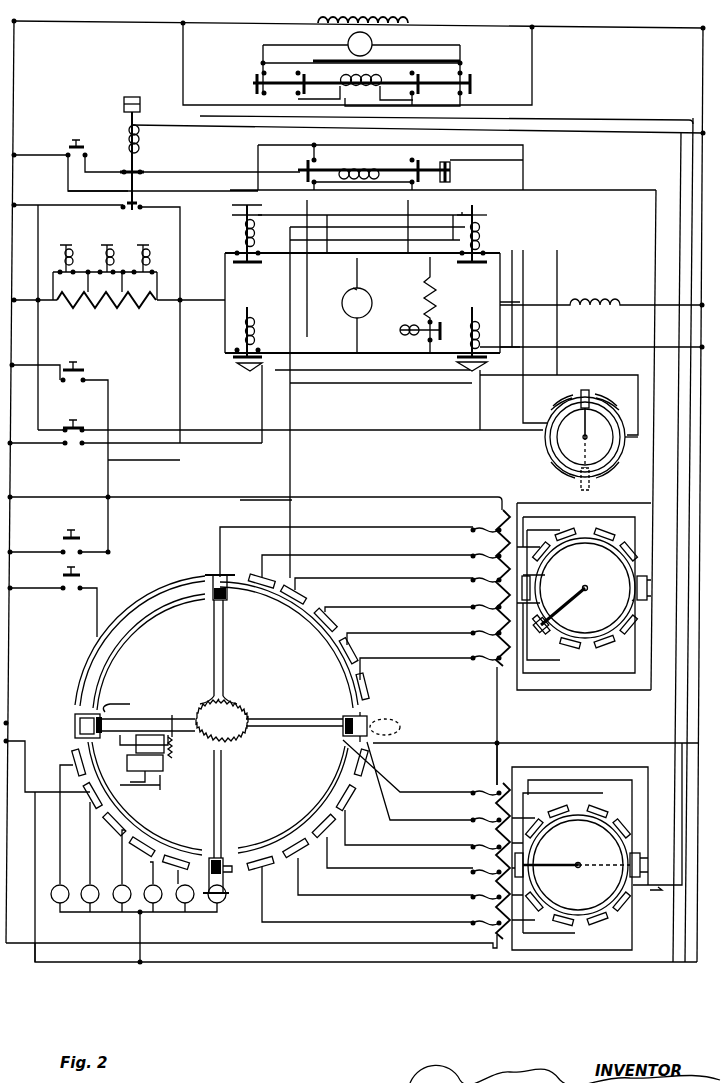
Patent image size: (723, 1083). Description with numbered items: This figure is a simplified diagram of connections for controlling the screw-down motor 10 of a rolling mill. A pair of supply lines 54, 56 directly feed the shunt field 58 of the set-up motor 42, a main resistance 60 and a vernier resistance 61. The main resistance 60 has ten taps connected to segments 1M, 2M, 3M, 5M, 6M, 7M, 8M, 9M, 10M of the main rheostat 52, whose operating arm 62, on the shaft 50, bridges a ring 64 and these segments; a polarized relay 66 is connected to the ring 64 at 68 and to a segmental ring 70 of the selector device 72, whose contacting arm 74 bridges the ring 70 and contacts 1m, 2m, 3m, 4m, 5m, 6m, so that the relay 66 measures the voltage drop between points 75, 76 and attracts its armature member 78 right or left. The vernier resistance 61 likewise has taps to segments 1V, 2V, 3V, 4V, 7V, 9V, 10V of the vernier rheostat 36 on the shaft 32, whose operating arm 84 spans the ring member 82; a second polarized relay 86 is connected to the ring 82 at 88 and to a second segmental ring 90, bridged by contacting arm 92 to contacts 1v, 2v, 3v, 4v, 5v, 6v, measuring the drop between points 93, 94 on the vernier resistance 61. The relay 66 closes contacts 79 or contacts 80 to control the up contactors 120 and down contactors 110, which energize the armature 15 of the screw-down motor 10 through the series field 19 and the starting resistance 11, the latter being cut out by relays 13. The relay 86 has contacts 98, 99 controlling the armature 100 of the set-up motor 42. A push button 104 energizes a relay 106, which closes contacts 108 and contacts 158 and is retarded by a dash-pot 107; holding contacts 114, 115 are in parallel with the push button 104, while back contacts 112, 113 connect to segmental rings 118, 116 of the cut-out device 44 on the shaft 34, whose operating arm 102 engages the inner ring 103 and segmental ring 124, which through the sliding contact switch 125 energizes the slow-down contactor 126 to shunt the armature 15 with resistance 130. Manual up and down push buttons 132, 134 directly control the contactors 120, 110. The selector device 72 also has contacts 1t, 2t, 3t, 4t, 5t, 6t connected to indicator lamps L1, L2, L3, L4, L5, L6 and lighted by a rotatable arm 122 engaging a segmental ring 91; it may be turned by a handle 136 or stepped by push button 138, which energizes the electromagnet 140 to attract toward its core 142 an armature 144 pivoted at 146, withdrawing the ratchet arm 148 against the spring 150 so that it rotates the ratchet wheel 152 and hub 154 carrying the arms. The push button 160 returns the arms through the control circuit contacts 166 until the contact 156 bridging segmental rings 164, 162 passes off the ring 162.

The supply line 54 is at (14, 74).
The supply line 56 is at (702, 72).
The shunt field 58 is at (320, 25).
The set-up motor 42 is at (375, 42).
The armature 100 is at (355, 50).
The normally open contacts 98 is at (258, 90).
The normally open contacts 99 is at (472, 62).
The second polarized relay 86 is at (345, 104).
The dash-pot 107 is at (140, 96).
The push button 104 is at (66, 152).
The relay 106 is at (141, 147).
The normally-open contacts 108 is at (142, 168).
The normally-open contacts 158 is at (128, 212).
The normally-open contacts 114 is at (362, 185).
The contacts 80 is at (303, 160).
The polarized relay 66 is at (348, 166).
The armature member 78 is at (378, 160).
The contacts 79 is at (412, 158).
The sliding contact switch 125 is at (452, 166).
The relays 13 is at (120, 248).
The accelerating or starting resistance 11 is at (100, 302).
The down contactors 110 is at (252, 232).
The normally-open contacts 115 is at (462, 212).
The up contactors 120 is at (238, 318).
The armature 15 is at (353, 288).
The screw-down motor 10 is at (362, 288).
The resistance 130 is at (425, 290).
The slow-down contactor 126 is at (415, 325).
The normally closed back contacts 113 is at (252, 372).
The normally closed back contacts 112 is at (472, 374).
The series field 19 is at (598, 300).
The up push button 132 is at (76, 362).
The down push button 134 is at (86, 405).
The segmental ring 124 is at (596, 398).
The cut-out or directional control device 44 is at (585, 437).
The operating arm 102 is at (600, 426).
The shaft 34 is at (595, 463).
The segmental ring 118 is at (550, 452).
The inner ring 103 is at (552, 466).
The segmental ring 116 is at (616, 455).
The main resistance 60 is at (506, 508).
The point on main resistance 75 is at (494, 526).
The point on main resistance 76 is at (482, 603).
The segment 7M is at (562, 528).
The segment 8M is at (604, 528).
The segment 9M is at (569, 551).
The segment 10M is at (634, 548).
The segment 1M is at (648, 580).
The segment 2M is at (638, 624).
The segment 3M is at (606, 648).
The segment 5M is at (555, 626).
The segment 6M is at (524, 590).
The main rheostat 52 is at (585, 588).
The connection point 68 is at (585, 588).
The shaft 50 is at (585, 580).
The operating arm 62 is at (574, 606).
The ring 64 is at (632, 600).
The push button 138 is at (80, 525).
The push button 160 is at (72, 570).
The segmental ring 162 is at (178, 586).
The segmental ring 164 is at (157, 610).
The segmental ring 70 is at (318, 640).
The second segmental ring 90 is at (337, 790).
The segmental ring 91 is at (170, 812).
The ratchet wheel 152 is at (222, 720).
The contacting rotatable arm 74 is at (224, 598).
The hub 154 is at (238, 706).
The selector device 72 is at (274, 728).
The ratchet arm 148 is at (222, 764).
The contact 1m is at (226, 574).
The contact 1v is at (368, 726).
The contact 1t is at (224, 884).
The rotatable arm 122 is at (228, 862).
The handle 136 is at (400, 727).
The contacting arm 92 is at (342, 734).
The contact 2m is at (267, 574).
The contact 3m is at (304, 600).
The contact 4m is at (333, 620).
The contact 5m is at (356, 657).
The contact 6m is at (369, 690).
The contact 2v is at (368, 758).
The contact 3v is at (350, 800).
The contact 4v is at (332, 835).
The contact 5v is at (306, 858).
The contact 6v is at (268, 870).
The contact 2t is at (178, 856).
The contact 3t is at (140, 855).
The contact 4t is at (110, 832).
The contact 5t is at (88, 800).
The contact 6t is at (72, 758).
The contact 156 is at (80, 738).
The electromagnet 140 is at (151, 744).
The core 142 is at (133, 735).
The armature 144 is at (118, 722).
The spring 150 is at (178, 716).
The pivot 146 is at (164, 770).
The control circuit contacts 166 is at (160, 790).
The indicator lamp L6 is at (58, 905).
The indicator lamp L5 is at (89, 905).
The indicator lamp L4 is at (121, 905).
The indicator lamp L3 is at (153, 905).
The indicator lamp L2 is at (184, 905).
The indicator lamp L1 is at (217, 905).
The vernier resistance 61 is at (494, 788).
The point on vernier resistance 93 is at (480, 800).
The point on vernier resistance 94 is at (480, 866).
The ring member 82 is at (552, 882).
The connection point 88 is at (624, 884).
The vernier rheostat 36 is at (593, 857).
The shaft 32 is at (578, 862).
The operating arm 84 is at (550, 855).
The segment 9V is at (600, 808).
The segment 7V is at (540, 832).
The segment 10V is at (630, 826).
The segment 1V is at (642, 866).
The segment 2V is at (630, 900).
The segment 3V is at (600, 922).
The segment 4V is at (565, 930).